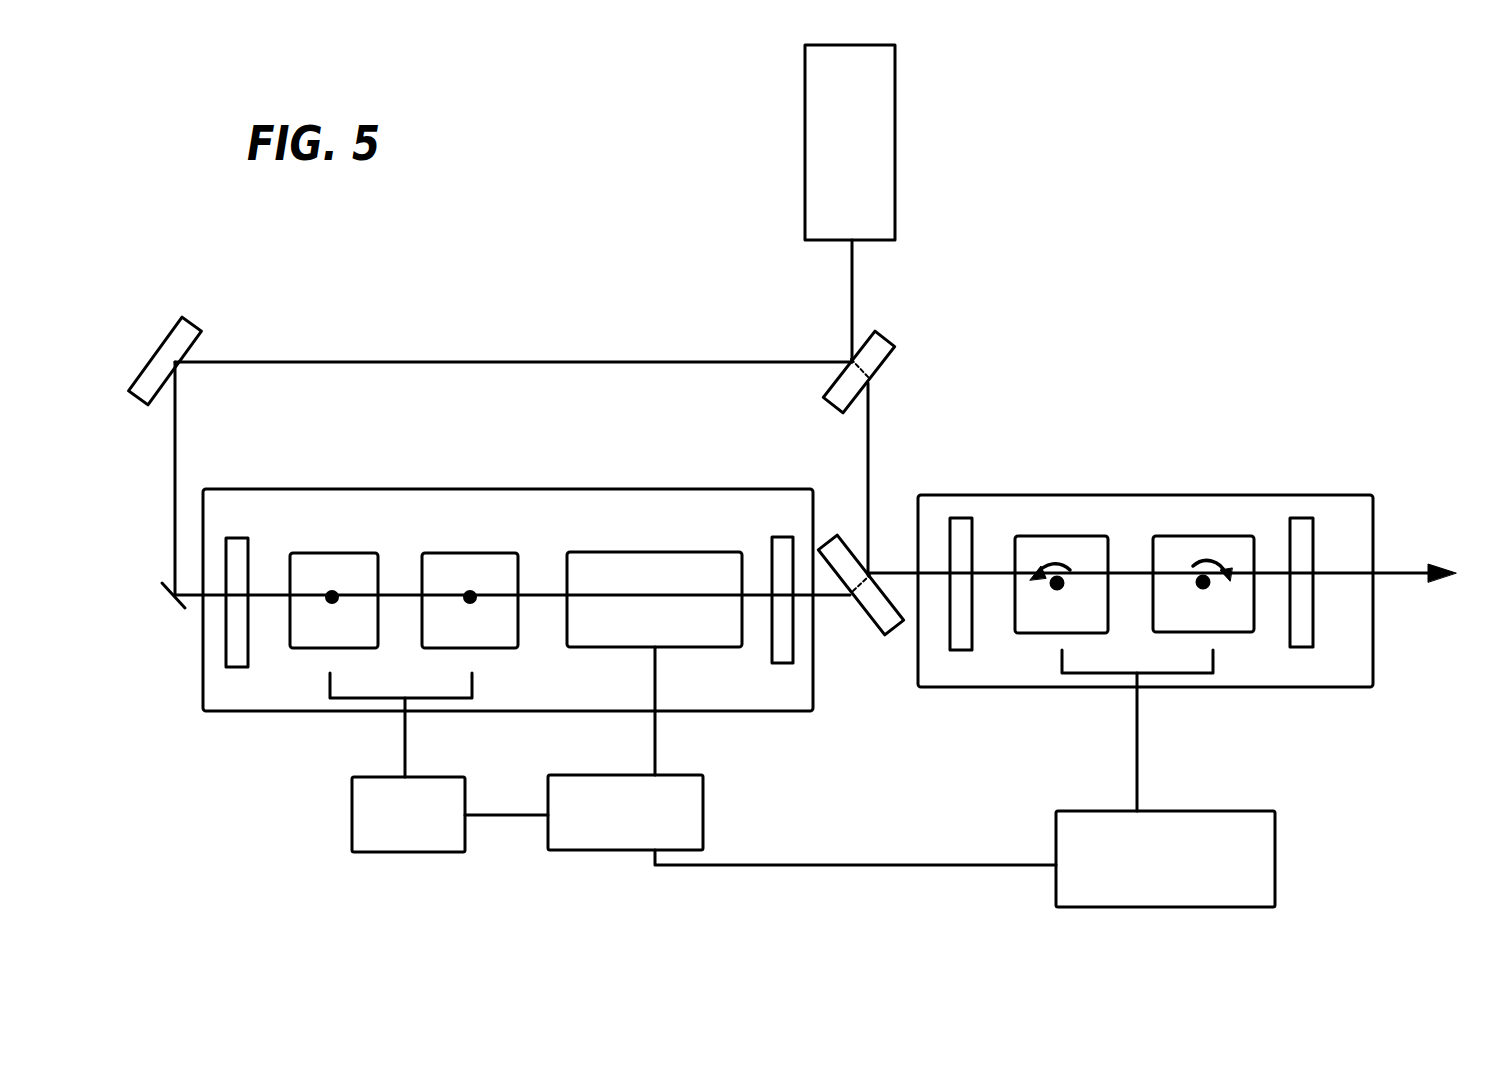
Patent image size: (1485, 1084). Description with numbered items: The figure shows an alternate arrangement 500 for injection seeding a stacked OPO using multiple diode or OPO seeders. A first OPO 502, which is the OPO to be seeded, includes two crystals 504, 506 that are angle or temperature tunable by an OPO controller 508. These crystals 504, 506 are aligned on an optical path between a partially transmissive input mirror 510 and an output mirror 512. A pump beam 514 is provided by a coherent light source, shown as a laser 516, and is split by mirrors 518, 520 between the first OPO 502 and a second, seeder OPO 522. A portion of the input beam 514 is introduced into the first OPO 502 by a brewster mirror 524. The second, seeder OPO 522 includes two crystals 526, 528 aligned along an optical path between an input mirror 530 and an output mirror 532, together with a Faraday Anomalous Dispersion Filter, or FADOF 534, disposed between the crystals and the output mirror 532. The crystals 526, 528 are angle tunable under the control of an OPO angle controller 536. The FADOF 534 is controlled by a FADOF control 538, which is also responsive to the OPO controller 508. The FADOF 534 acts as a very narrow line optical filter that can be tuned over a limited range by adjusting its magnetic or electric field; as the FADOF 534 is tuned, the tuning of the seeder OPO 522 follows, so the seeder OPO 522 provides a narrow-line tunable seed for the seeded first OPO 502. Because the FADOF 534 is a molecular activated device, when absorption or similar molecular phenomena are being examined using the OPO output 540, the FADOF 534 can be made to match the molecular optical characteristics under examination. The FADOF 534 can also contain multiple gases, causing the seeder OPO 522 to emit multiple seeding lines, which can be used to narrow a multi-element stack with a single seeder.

The alternate arrangement 500 is at (1022, 334).
The first OPO 502 is at (1063, 495).
The crystal 504 is at (1075, 536).
The crystal 506 is at (1195, 536).
The OPO controller 508 is at (1212, 810).
The partially transmissive input mirror 510 is at (961, 518).
The output mirror 512 is at (1340, 466).
The pump beam 514 is at (853, 293).
The laser 516 is at (897, 187).
The mirror 518 is at (880, 372).
The mirror 520 is at (167, 337).
The second (seeder) OPO 522 is at (487, 488).
The brewster mirror 524 is at (883, 640).
The crystal 526 is at (330, 552).
The crystal 528 is at (473, 552).
The input mirror 530 is at (242, 538).
The output mirror 532 is at (771, 543).
The Faraday Anomalous Dispersion Filter (FADOF) 534 is at (641, 552).
The OPO angle controller 536 is at (440, 853).
The FADOF control 538 is at (703, 800).
The OPO output 540 is at (1392, 570).